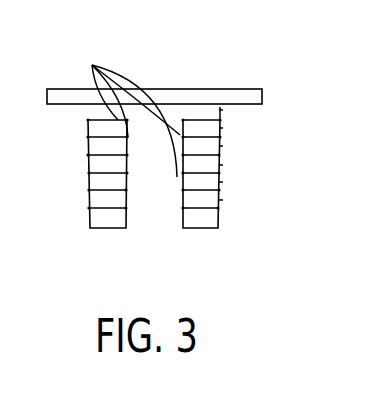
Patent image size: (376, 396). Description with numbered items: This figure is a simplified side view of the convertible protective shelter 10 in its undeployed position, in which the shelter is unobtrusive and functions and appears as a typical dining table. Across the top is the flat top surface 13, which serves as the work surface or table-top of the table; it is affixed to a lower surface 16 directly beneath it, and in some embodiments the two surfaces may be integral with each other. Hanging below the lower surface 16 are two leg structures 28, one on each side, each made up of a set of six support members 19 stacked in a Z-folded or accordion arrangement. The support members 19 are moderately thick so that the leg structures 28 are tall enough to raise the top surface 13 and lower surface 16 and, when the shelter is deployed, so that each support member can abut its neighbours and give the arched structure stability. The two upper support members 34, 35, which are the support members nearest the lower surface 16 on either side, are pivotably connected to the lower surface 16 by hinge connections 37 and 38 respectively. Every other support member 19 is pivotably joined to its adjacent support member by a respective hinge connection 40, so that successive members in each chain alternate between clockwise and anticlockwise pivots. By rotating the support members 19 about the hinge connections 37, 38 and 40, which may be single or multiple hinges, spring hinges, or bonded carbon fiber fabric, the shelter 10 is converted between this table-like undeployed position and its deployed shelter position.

The protective shelter 10 is at (168, 60).
The top surface 13 is at (210, 97).
The lower surface 16 is at (222, 108).
The support members 19 is at (219, 203).
The leg structures 28 is at (197, 228).
The upper support member 34 is at (220, 128).
The upper support member 35 is at (96, 128).
The hinge connection 37 is at (220, 120).
The hinge connection 38 is at (90, 120).
The hinge connections 40 is at (131, 106).